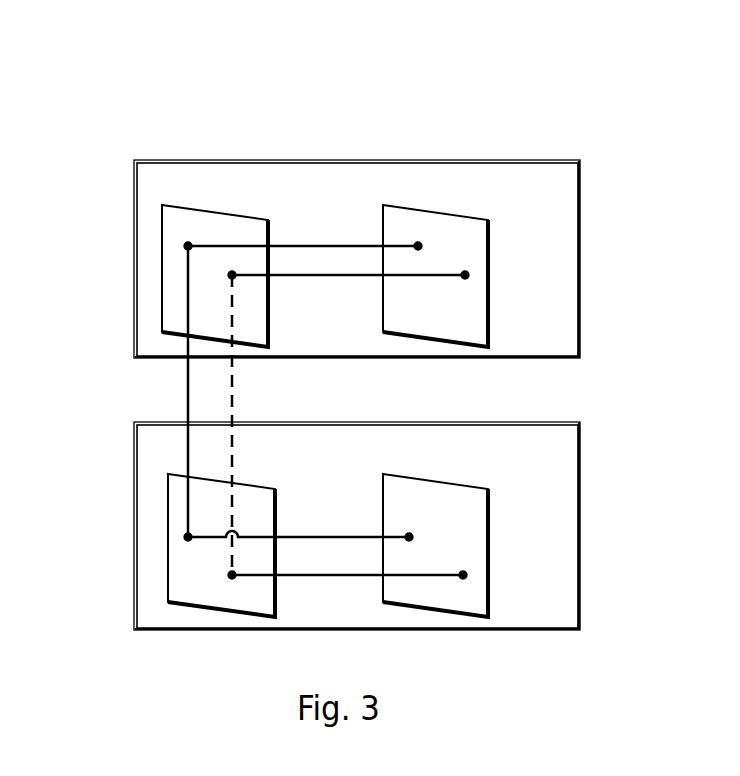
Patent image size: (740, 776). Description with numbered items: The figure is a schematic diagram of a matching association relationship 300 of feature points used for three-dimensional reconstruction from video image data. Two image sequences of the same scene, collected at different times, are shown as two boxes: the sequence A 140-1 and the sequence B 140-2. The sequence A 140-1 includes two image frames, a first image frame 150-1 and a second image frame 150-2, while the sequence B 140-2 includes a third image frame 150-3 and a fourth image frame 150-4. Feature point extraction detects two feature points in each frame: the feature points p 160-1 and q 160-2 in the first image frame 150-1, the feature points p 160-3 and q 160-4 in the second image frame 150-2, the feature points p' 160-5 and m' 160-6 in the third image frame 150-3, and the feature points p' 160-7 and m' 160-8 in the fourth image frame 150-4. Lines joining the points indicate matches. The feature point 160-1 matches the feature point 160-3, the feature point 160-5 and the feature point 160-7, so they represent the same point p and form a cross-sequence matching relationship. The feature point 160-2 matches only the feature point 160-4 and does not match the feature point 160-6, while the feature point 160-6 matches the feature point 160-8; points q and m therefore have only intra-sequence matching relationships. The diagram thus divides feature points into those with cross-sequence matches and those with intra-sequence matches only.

The matching association relationship 300 is at (172, 75).
The image sequence A 140-1 is at (538, 158).
The image sequence B 140-2 is at (540, 422).
The image frame A-1 150-1 is at (247, 213).
The image frame A-2 150-2 is at (470, 215).
The image frame B-1 150-3 is at (242, 483).
The image frame B-2 150-4 is at (463, 482).
The feature point p1 160-1 is at (188, 246).
The feature point q1 160-2 is at (232, 275).
The feature point p2 160-3 is at (418, 246).
The feature point q2 160-4 is at (465, 275).
The feature point p1' 160-5 is at (186, 538).
The feature point m1' 160-6 is at (232, 575).
The feature point p2' 160-7 is at (409, 537).
The feature point m2' 160-8 is at (463, 575).